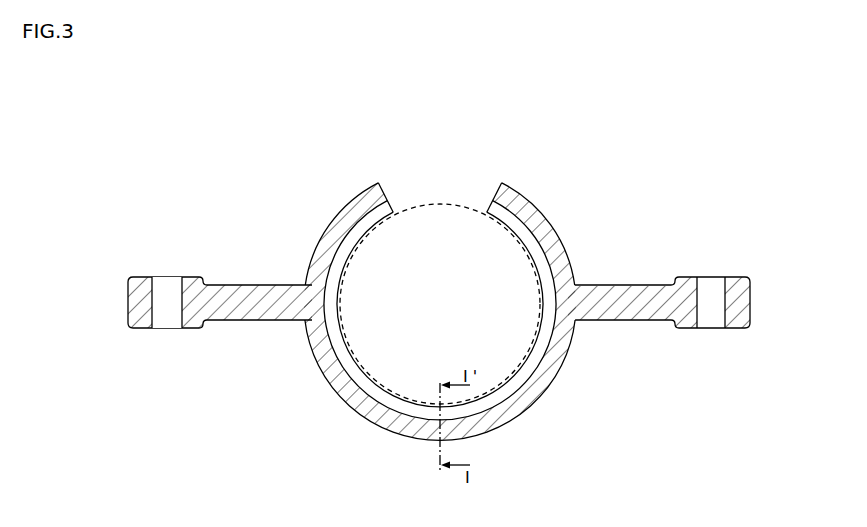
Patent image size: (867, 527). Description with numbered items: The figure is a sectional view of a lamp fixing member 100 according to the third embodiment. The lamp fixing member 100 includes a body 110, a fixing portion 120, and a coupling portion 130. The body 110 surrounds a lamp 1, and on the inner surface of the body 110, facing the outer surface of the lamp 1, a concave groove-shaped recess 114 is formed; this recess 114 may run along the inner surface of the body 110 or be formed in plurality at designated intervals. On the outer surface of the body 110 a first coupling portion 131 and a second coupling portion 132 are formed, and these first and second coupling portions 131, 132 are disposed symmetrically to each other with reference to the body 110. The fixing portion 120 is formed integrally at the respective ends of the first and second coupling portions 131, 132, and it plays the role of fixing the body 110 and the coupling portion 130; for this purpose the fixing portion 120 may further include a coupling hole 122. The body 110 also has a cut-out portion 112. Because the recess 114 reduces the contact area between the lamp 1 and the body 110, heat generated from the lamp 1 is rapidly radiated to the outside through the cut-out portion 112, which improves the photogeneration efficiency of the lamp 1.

The lamp 1 is at (421, 202).
The lamp fixing member 100 is at (539, 188).
The body 110 is at (556, 243).
The cut-out portion 112 is at (458, 186).
The recess 114 is at (357, 231).
The fixing portion 120 is at (130, 267).
The coupling hole 122 is at (173, 312).
The coupling portion 130 is at (239, 276).
The first coupling portion 131 is at (630, 293).
The second coupling portion 132 is at (279, 283).